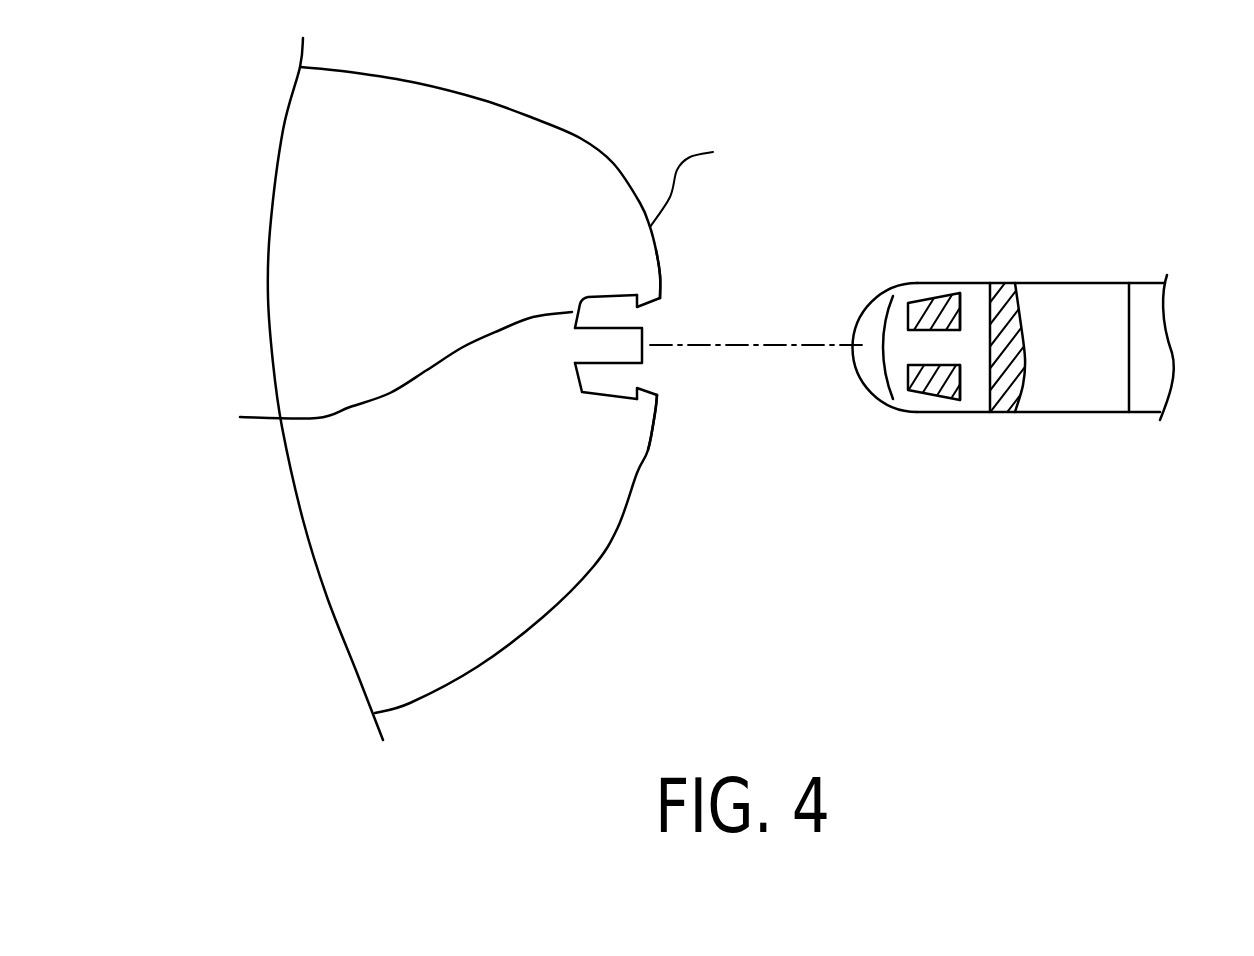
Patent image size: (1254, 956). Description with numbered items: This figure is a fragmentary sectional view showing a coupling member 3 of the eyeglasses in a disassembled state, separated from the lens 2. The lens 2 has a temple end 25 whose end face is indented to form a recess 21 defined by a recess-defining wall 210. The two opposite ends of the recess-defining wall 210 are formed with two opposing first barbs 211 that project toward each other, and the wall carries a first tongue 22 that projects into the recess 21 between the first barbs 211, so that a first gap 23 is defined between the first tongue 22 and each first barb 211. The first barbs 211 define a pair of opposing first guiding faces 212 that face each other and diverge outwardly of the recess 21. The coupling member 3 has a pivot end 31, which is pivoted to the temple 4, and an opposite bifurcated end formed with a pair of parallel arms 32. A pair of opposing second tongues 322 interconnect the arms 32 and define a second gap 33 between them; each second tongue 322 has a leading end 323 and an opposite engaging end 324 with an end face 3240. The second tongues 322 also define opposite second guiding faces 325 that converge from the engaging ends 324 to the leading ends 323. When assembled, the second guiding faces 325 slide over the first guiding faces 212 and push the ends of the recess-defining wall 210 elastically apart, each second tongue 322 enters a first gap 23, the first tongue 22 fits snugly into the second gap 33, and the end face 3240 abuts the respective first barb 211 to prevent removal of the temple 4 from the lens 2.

The lens 2 is at (452, 613).
The recess 21 is at (656, 359).
The recess-defining wall 210 is at (368, 376).
The first barbs 211 is at (645, 295).
The first guiding faces 212 is at (660, 300).
The first tongue 22 is at (623, 347).
The first gap 23 is at (597, 297).
The temple end 25 is at (702, 178).
The coupling member 3 is at (1005, 342).
The pivot end 31 is at (1108, 303).
The arms 32 is at (987, 342).
The second tongues 322 is at (920, 310).
The leading end 323 is at (895, 315).
The engaging end 324 is at (993, 290).
The end face 3240 is at (1010, 315).
The second guiding faces 325 is at (930, 315).
The second gap 33 is at (933, 343).
The temple 4 is at (1143, 413).